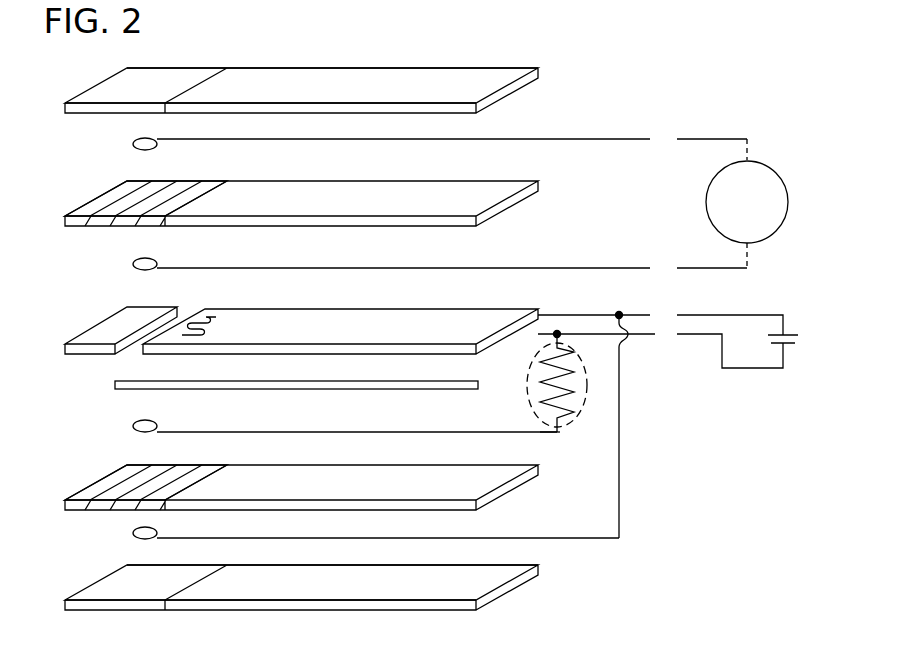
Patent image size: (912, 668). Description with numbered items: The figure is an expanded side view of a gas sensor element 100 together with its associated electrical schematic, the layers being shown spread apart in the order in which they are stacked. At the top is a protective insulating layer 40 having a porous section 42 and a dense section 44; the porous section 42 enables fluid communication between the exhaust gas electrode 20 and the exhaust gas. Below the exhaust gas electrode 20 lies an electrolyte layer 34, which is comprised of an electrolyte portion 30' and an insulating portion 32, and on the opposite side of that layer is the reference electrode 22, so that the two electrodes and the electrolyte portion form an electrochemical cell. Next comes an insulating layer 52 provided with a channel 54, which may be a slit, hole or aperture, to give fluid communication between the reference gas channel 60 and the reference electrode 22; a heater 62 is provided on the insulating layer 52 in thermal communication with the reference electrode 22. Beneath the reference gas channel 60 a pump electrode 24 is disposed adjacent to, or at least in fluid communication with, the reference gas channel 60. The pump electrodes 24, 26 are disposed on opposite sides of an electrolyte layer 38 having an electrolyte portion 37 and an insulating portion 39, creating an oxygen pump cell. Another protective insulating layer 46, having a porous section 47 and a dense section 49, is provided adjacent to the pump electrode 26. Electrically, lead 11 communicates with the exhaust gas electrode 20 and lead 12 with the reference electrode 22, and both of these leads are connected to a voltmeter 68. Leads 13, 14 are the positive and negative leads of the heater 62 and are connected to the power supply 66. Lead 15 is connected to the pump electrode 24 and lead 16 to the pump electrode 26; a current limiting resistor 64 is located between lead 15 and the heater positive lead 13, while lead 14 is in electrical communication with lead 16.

The sensor element 100 is at (690, 68).
The protective insulating layer 40 is at (279, 71).
The porous section 42 is at (160, 68).
The dense section 44 is at (273, 68).
The lead 11 is at (580, 138).
The exhaust gas electrode 20 is at (132, 143).
The insulating portion 32 is at (317, 193).
The electrolyte layer 34 is at (123, 203).
The electrolyte portion 30' is at (161, 183).
The lead 12 is at (582, 267).
The reference electrode 22 is at (132, 263).
The voltmeter 68 is at (778, 170).
The insulating layer 52 is at (108, 322).
The channel 54 is at (182, 318).
The heater 62 is at (268, 318).
The reference gas channel 60 is at (115, 385).
The lead 14 is at (643, 317).
The lead 13 is at (637, 338).
The lead 16 is at (622, 478).
The power supply 66 is at (793, 345).
The current limiting resistor 64 is at (528, 397).
The lead 15 is at (540, 432).
The pump electrode 24 is at (132, 425).
The insulating portion 39 is at (275, 470).
The electrolyte layer 38 is at (88, 493).
The electrolyte portion 37 is at (167, 492).
The pump electrode 26 is at (132, 532).
The protective insulating layer 46 is at (97, 582).
The porous section 47 is at (135, 592).
The dense section 49 is at (258, 593).